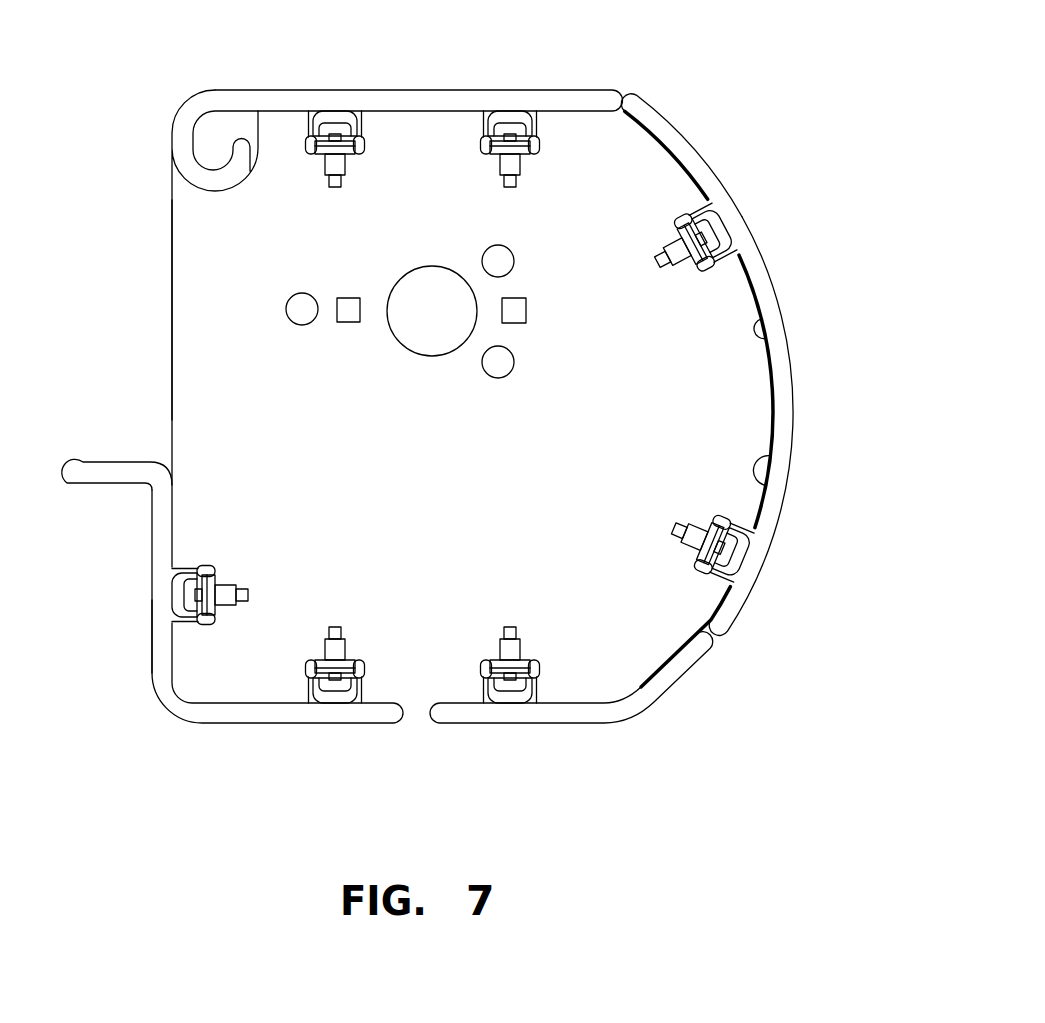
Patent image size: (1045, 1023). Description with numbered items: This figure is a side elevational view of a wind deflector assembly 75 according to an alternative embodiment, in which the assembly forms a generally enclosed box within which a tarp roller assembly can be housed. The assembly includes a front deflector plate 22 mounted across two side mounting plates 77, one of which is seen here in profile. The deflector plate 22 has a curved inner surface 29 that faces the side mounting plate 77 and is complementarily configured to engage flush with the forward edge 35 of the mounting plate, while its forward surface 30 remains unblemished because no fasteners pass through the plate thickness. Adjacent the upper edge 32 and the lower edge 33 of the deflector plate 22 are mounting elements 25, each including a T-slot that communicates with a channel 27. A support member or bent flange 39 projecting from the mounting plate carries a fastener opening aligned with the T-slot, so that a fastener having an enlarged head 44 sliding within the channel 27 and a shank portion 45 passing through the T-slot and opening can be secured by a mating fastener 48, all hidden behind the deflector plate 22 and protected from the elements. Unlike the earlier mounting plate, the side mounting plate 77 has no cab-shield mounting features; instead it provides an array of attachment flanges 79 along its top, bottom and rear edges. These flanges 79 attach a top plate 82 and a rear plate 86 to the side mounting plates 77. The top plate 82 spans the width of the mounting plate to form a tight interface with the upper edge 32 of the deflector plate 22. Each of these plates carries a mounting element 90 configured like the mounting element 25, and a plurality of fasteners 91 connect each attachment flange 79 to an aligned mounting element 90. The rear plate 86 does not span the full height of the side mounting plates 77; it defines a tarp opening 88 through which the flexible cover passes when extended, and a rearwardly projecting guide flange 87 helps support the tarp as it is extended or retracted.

The deflector plate 22 is at (780, 426).
The mounting element 25 is at (752, 530).
The channel 27 is at (733, 236).
The inner surface 29 is at (766, 505).
The forward surface 30 is at (787, 338).
The upper edge 32 is at (633, 97).
The lower edge 33 is at (719, 637).
The forward edge 35 is at (760, 337).
The support member 39 is at (680, 243).
The enlarged head 44 is at (712, 221).
The shank portion 45 is at (680, 523).
The mating fastener 48 is at (681, 266).
The wind deflector assembly 75 is at (592, 66).
The side mounting plate 77 is at (210, 265).
The attachment flange 79 is at (365, 143).
The top plate 82 is at (381, 100).
The rear plate 86 is at (158, 637).
The guide flange 87 is at (100, 475).
The tarp opening 88 is at (172, 308).
The mounting element 90 is at (313, 126).
The fastener 91 is at (326, 170).